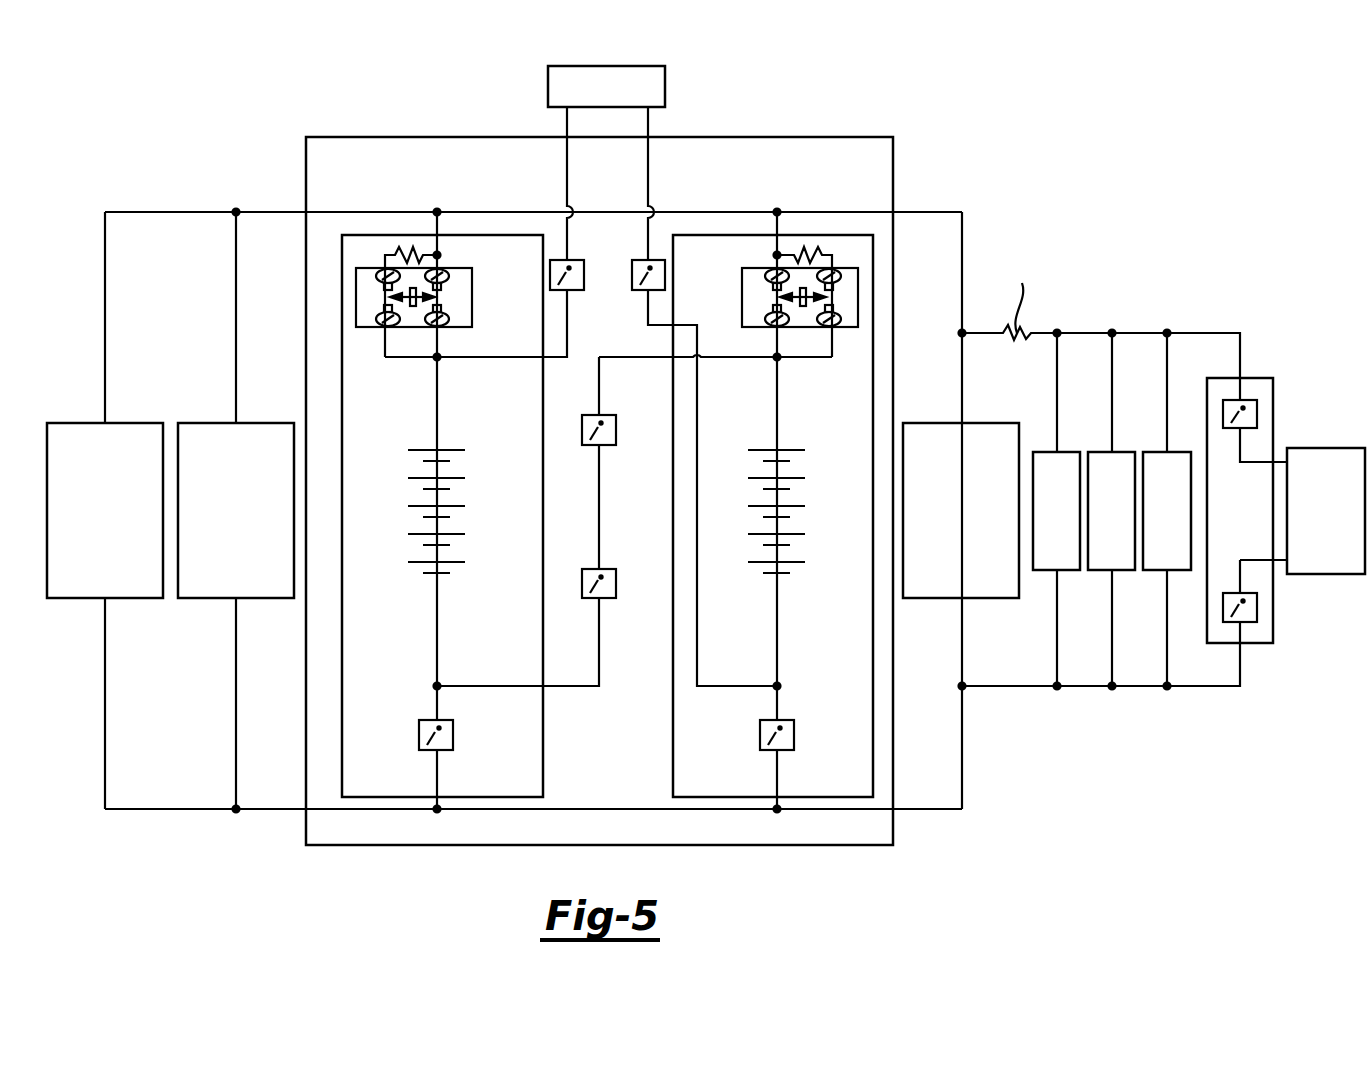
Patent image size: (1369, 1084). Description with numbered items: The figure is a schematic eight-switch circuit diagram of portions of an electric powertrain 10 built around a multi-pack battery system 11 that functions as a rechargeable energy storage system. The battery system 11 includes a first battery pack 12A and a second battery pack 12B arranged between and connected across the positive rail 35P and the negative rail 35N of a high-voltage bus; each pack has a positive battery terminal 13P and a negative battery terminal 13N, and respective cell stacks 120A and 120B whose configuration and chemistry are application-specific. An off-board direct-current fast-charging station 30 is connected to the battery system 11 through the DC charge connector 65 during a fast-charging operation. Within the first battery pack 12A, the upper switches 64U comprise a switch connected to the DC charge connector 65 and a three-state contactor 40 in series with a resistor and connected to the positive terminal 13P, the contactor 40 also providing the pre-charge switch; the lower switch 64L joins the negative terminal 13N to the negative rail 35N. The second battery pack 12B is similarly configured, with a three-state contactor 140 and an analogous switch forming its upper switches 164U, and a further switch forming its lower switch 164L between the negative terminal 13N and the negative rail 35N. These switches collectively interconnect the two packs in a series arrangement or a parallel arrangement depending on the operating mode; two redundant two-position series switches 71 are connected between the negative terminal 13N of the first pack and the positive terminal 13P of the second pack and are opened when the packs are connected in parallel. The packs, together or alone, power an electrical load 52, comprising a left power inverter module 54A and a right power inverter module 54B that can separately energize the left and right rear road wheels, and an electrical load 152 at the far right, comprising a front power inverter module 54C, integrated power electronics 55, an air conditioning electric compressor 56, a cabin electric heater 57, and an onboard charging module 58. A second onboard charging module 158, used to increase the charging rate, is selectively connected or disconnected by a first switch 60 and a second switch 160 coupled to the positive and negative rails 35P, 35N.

The electric powertrain 10 is at (1177, 153).
The battery system 11 is at (760, 137).
The first battery pack 12A is at (412, 235).
The second battery pack 12B is at (707, 235).
The positive battery terminal 13P is at (437, 450).
The negative battery terminal 13N is at (437, 573).
The DC fast-charging charging station 30 is at (548, 86).
The positive rail 35P is at (538, 212).
The negative rail 35N is at (610, 809).
The three-state contactor 40 is at (486, 300).
The three-state contactor 140 is at (733, 306).
The electrical load 52 is at (172, 637).
The left power inverter module 54A is at (75, 423).
The right power inverter module 54B is at (205, 423).
The front power inverter module 54C is at (940, 423).
The integrated power electronics 55 is at (1045, 452).
The air conditioning electric compressor 56 is at (1100, 452).
The cabin electric heater 57 is at (1155, 452).
The onboard charging module 58 is at (1218, 378).
The switch OB1 60 is at (1250, 400).
The upper switches 64U is at (556, 318).
The lower switch 64L is at (406, 710).
The DC charge connector 65 is at (538, 153).
The series switches 71 is at (580, 480).
The cell stack 120A is at (417, 450).
The cell stack 120B is at (757, 450).
The electrical load 152 is at (1127, 724).
The second onboard charging module 158 is at (1325, 448).
The switch OB2 160 is at (1250, 622).
The upper switches 164U is at (632, 254).
The lower switch 164L is at (812, 710).